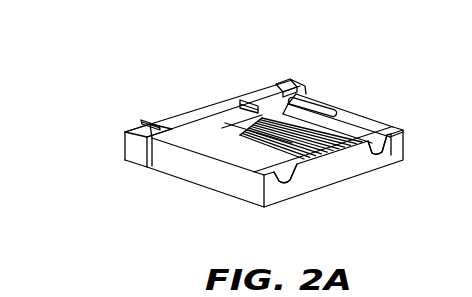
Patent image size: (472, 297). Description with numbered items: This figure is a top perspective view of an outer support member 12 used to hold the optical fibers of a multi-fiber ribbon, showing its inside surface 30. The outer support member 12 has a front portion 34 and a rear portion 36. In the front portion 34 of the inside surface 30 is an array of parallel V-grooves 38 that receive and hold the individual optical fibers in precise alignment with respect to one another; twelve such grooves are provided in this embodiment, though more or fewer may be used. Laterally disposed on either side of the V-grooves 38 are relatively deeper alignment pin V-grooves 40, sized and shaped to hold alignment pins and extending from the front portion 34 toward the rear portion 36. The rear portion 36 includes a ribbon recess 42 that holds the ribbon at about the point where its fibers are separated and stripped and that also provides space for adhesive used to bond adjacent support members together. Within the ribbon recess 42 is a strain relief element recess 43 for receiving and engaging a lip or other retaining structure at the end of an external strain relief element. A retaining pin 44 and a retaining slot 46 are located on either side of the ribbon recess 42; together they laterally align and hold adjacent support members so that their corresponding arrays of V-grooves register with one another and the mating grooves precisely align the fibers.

The outer support member 12 is at (211, 29).
The inside surface 30 is at (313, 97).
The front portion 34 is at (385, 108).
The rear portion 36 is at (118, 181).
The V-grooves 38 is at (326, 168).
The alignment pin V-grooves 40 is at (291, 172).
The ribbon recess 42 is at (204, 110).
The strain relief element recess 43 is at (236, 103).
The retaining pin 44 is at (150, 124).
The retaining slot 46 is at (288, 80).